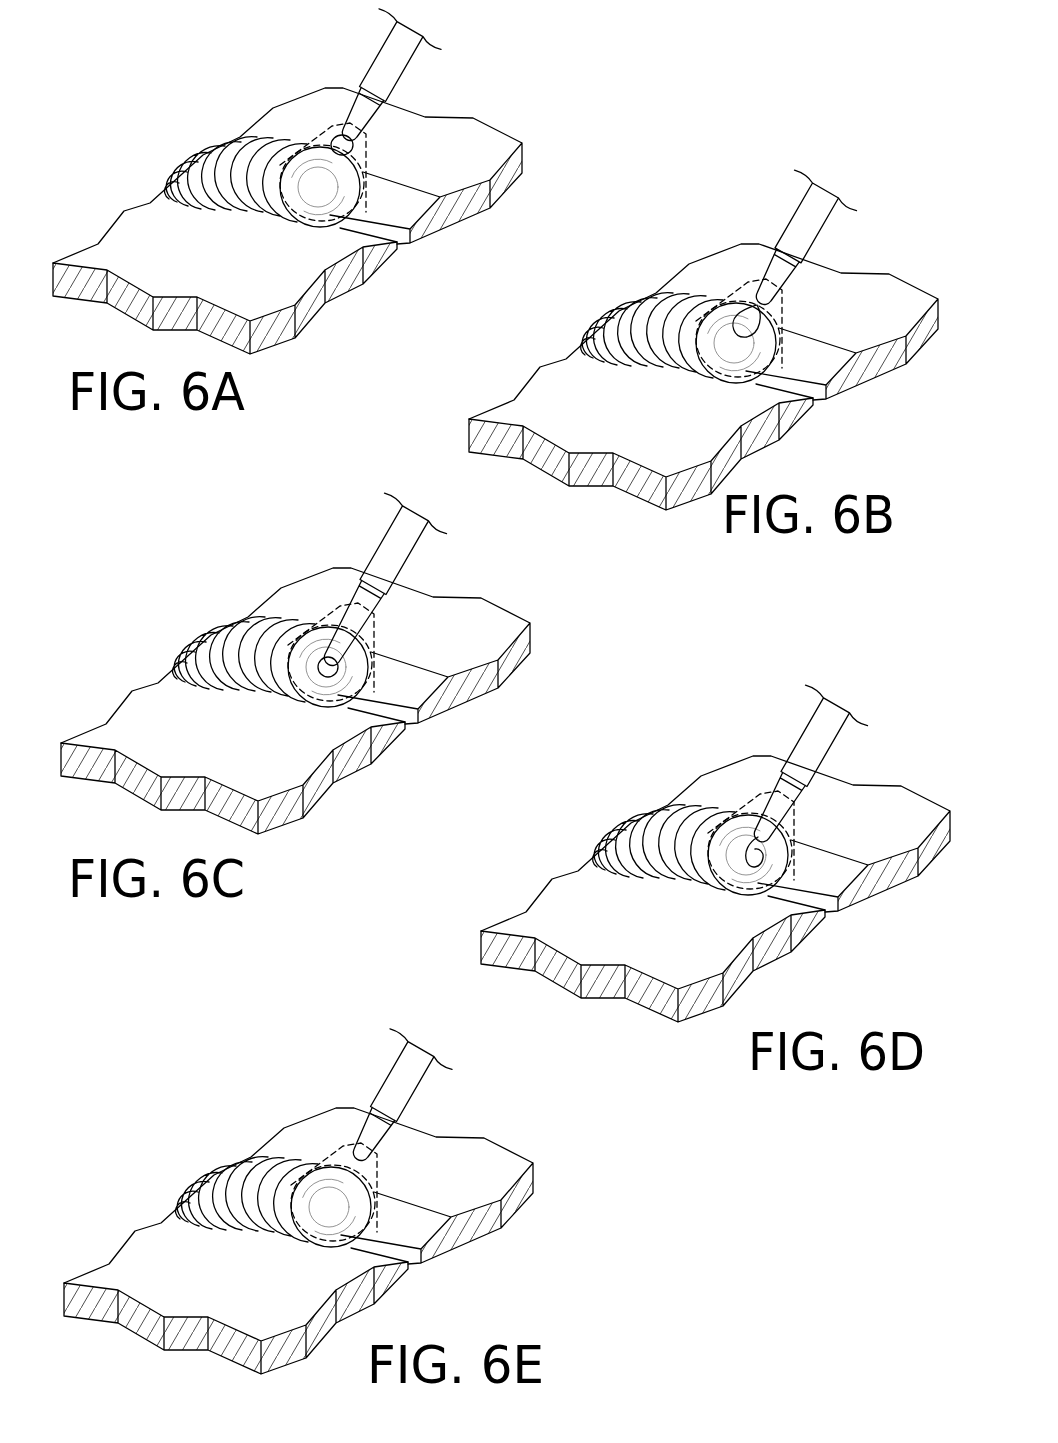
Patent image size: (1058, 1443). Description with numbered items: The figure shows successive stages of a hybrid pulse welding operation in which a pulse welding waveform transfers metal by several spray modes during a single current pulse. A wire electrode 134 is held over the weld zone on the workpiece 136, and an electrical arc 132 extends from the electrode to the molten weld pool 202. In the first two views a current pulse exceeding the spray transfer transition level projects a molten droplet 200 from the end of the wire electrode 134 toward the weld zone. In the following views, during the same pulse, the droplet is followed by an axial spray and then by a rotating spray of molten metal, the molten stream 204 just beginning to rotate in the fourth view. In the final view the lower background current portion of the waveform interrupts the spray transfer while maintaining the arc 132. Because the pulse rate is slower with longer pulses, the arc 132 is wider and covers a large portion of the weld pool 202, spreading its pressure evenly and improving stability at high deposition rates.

In FIG. 6A, the arc 132 is at (320, 134).
In FIG. 6B, the arc 132 is at (732, 297).
In FIG. 6C, the arc 132 is at (324, 621).
In FIG. 6D, the arc 132 is at (744, 809).
In FIG. 6E, the arc 132 is at (327, 1161).
In FIG. 6A, the wire electrode 134 is at (400, 67).
In FIG. 6B, the wire electrode 134 is at (826, 237).
In FIG. 6C, the wire electrode 134 is at (406, 579).
In FIG. 6D, the wire electrode 134 is at (831, 763).
In FIG. 6E, the wire electrode 134 is at (422, 1095).
In FIG. 6A, the workpiece 136 is at (513, 163).
In FIG. 6B, the workpiece 136 is at (703, 377).
In FIG. 6C, the workpiece 136 is at (295, 701).
In FIG. 6D, the workpiece 136 is at (715, 889).
In FIG. 6E, the workpiece 136 is at (333, 1241).
In FIG. 6A, the droplet 200 is at (352, 146).
In FIG. 6B, the droplet 200 is at (789, 319).
In FIG. 6A, the weld pool 202 is at (317, 230).
In FIG. 6B, the weld pool 202 is at (678, 357).
In FIG. 6C, the weld pool 202 is at (270, 681).
In FIG. 6D, the weld pool 202 is at (690, 869).
In FIG. 6E, the weld pool 202 is at (273, 1221).
In FIG. 6C, the molten stream 204 is at (383, 651).
In FIG. 6D, the molten stream 204 is at (807, 841).